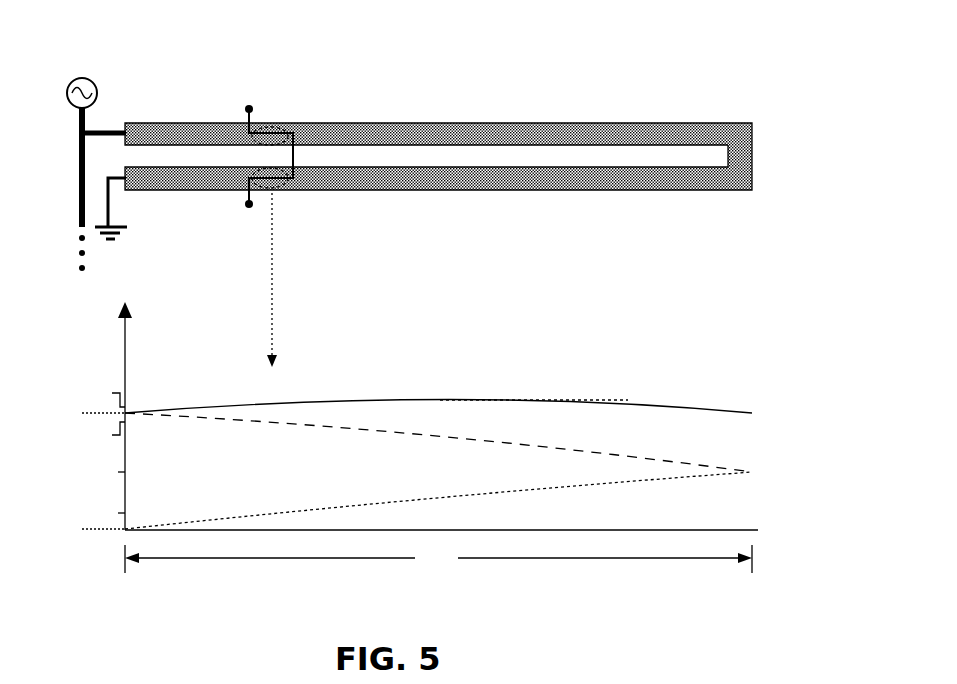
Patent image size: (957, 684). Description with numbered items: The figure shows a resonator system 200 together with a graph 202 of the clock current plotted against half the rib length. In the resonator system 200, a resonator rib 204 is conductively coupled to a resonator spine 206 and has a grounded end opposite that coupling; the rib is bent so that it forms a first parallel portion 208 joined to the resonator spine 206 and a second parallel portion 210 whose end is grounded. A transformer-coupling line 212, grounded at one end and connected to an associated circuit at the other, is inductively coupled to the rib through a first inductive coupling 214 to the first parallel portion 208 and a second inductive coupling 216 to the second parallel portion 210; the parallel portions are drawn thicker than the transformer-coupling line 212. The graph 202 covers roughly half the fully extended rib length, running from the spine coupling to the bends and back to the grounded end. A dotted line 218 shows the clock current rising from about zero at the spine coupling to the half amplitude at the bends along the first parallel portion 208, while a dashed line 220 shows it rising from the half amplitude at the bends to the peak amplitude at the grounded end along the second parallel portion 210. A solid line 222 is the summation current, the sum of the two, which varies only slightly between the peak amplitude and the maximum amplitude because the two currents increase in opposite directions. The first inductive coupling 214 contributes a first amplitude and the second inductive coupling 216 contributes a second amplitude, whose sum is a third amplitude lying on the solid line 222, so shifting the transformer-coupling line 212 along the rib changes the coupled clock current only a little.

The resonator system 200 is at (722, 45).
The graph 202 is at (722, 320).
The resonator rib 204 is at (597, 110).
The resonator spine 206 is at (80, 152).
The first parallel portion 208 is at (447, 123).
The second parallel portion 210 is at (447, 190).
The transformer-coupling line 212 is at (295, 152).
The first inductive coupling 214 is at (283, 126).
The second inductive coupling 216 is at (283, 190).
The dotted line 218 is at (355, 500).
The dashed line 220 is at (462, 441).
The solid line 222 is at (365, 402).